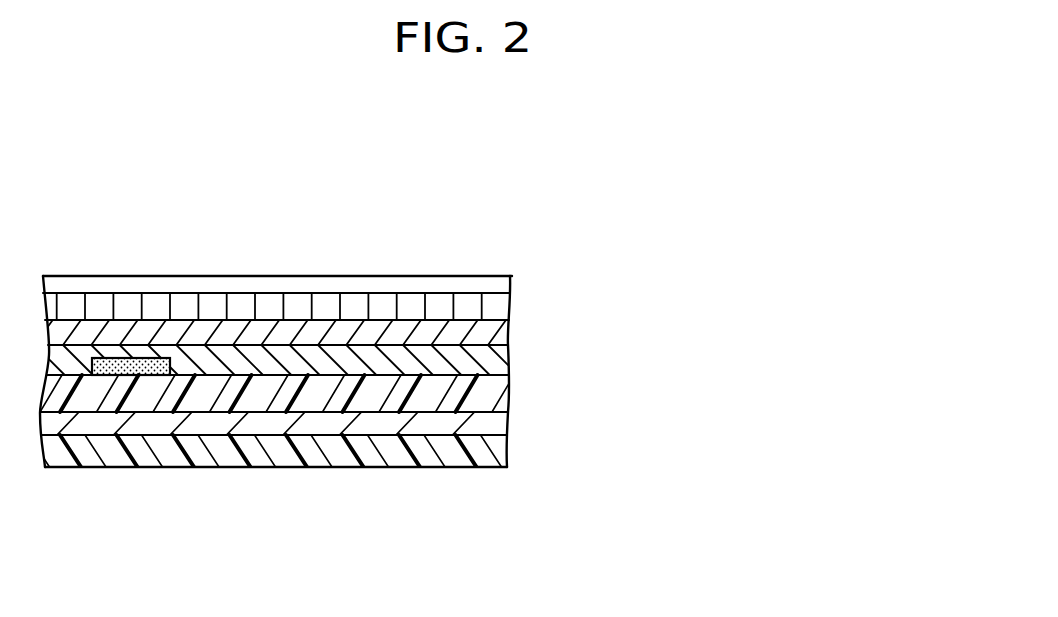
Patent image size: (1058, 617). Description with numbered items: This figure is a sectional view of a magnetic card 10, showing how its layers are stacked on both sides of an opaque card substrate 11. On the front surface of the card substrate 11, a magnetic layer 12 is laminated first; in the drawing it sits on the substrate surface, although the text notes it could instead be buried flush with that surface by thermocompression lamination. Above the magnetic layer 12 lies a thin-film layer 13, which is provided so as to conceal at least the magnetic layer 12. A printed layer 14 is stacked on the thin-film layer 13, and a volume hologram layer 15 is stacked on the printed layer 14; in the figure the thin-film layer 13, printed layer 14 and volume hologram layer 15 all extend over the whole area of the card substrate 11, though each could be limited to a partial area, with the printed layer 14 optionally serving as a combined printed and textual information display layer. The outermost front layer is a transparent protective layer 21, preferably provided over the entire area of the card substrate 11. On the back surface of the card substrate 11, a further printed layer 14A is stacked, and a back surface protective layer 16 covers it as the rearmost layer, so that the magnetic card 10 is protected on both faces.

The magnetic card 10 is at (441, 240).
The transparent protective layer 21 is at (485, 275).
The volume hologram layer 15 is at (511, 304).
The printed layer 14 is at (509, 333).
The thin-film layer 13 is at (509, 362).
The magnetic layer 12 is at (92, 358).
The card substrate 11 is at (509, 392).
The printed layer 14A is at (508, 429).
The back surface protective layer 16 is at (408, 468).